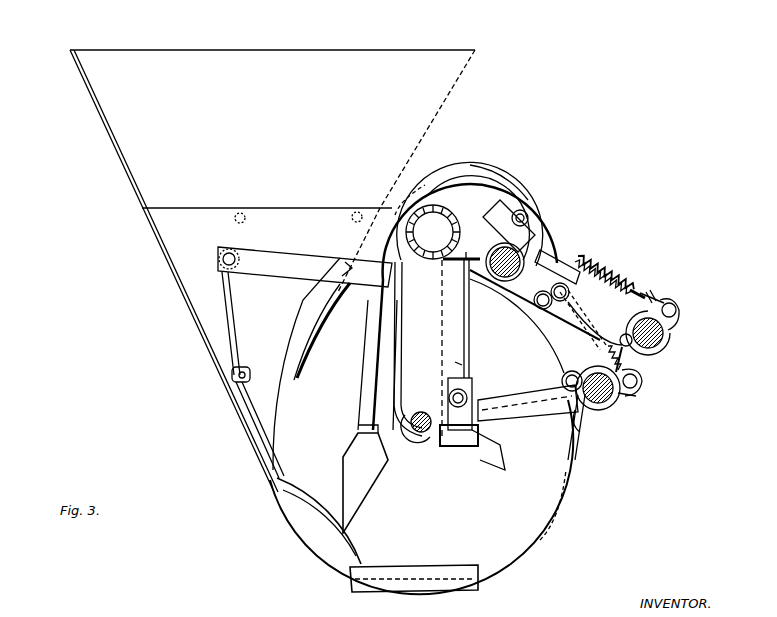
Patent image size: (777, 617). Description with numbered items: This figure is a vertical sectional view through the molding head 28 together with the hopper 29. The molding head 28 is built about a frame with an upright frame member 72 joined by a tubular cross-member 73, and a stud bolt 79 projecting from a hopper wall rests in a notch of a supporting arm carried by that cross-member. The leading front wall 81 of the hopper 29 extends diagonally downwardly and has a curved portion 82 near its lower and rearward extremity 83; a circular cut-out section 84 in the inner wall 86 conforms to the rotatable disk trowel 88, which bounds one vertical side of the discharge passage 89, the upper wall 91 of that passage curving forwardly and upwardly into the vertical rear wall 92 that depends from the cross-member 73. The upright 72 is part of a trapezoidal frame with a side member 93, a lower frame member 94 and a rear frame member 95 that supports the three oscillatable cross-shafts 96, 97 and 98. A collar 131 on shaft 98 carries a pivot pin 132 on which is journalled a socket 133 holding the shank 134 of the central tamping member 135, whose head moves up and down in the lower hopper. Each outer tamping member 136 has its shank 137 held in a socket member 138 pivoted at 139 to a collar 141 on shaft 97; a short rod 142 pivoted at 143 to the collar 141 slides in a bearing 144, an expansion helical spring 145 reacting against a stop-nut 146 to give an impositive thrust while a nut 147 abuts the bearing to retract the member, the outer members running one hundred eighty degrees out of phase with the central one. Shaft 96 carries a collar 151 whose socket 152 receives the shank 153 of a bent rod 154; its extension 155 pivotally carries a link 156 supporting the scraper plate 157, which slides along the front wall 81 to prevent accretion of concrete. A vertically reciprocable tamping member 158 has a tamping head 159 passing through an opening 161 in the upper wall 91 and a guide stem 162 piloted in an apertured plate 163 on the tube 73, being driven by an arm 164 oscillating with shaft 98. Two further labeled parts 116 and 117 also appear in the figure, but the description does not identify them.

The molding head 28 is at (125, 238).
The hopper 29 is at (105, 58).
The upright frame member 72 is at (440, 328).
The tubular cross-member 73 is at (462, 195).
The stud bolt 79 is at (240, 213).
The front wall 81 is at (100, 127).
The curved portion 82 is at (310, 546).
The lower and rearward extremity 83 is at (348, 575).
The circular cut-out section 84 is at (287, 352).
The inner wall 86 is at (212, 330).
The rotatable disk trowel 88 is at (533, 515).
The discharge passage 89 is at (508, 551).
The upper wall 91 is at (483, 455).
The vertical rear wall 92 is at (395, 372).
The side frame member 93 is at (548, 226).
The frame member 94 is at (588, 425).
The frame member 95 is at (637, 369).
The oscillatable cross-shaft 96 is at (470, 282).
The oscillatable cross-shaft 97 is at (648, 345).
The oscillatable cross-shaft 98 is at (609, 400).
The knife blade 116 is at (384, 455).
The blade arm 117 is at (400, 410).
The collar 131 is at (600, 417).
The pivot pin 132 is at (562, 379).
The socket 133 is at (555, 325).
The shank 134 is at (535, 180).
The tamping member 135 is at (362, 246).
The tamping member 136 is at (356, 425).
The shank 137 is at (553, 236).
The socket member 138 is at (625, 285).
The pivotal connection 139 is at (595, 355).
The collar 141 is at (672, 343).
The short rod 142 is at (660, 290).
The pivot 143 is at (680, 313).
The bearing 144 is at (583, 257).
The expansion helical spring 145 is at (605, 272).
The stop-nut 146 is at (680, 305).
The nut 147 is at (580, 243).
The collar 151 is at (455, 295).
The socket 152 is at (527, 180).
The shank 153 is at (500, 190).
The bent rod 154 is at (440, 172).
The extension 155 is at (245, 252).
The link 156 is at (222, 310).
The scraper plate 157 is at (232, 400).
The vertically reciprocable tamping member 158 is at (460, 363).
The tamping head 159 is at (443, 440).
The opening 161 is at (478, 404).
The guide stem 162 is at (470, 313).
The apertured plate 163 is at (450, 280).
The arm 164 is at (530, 396).